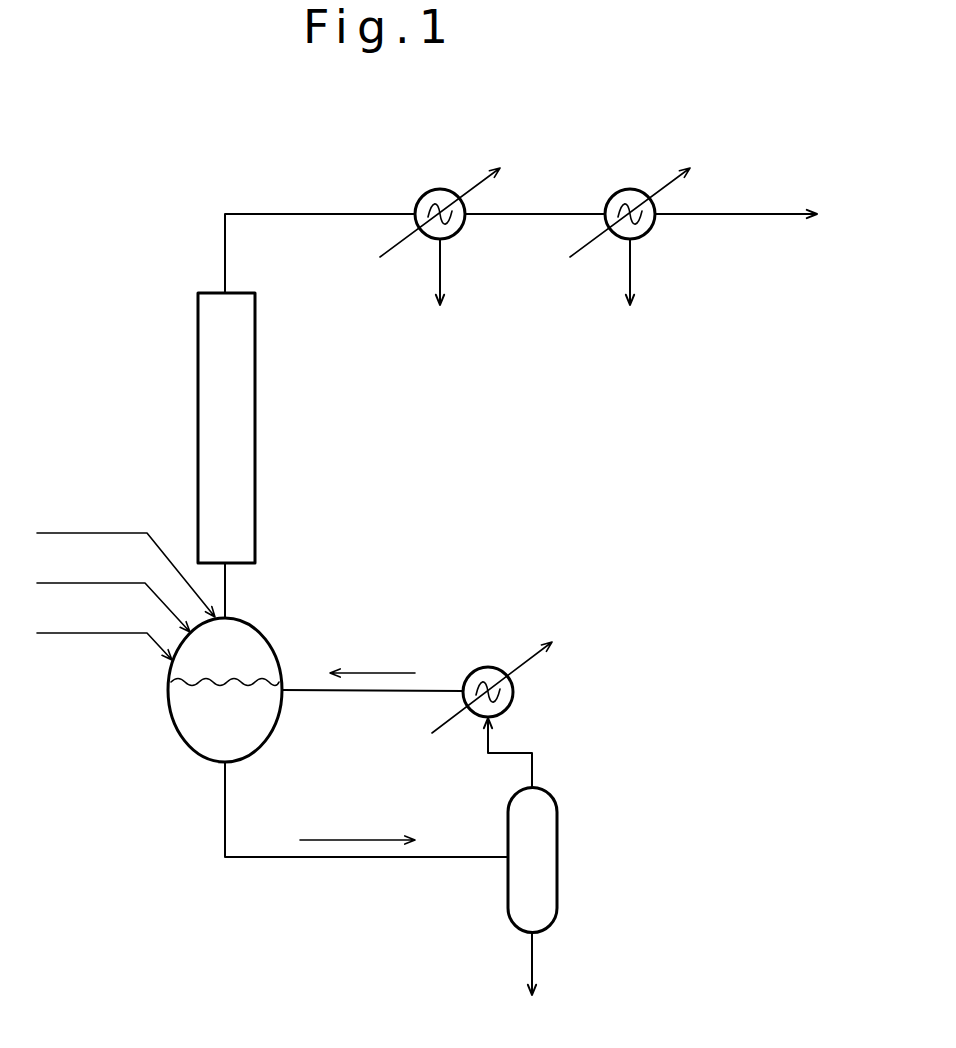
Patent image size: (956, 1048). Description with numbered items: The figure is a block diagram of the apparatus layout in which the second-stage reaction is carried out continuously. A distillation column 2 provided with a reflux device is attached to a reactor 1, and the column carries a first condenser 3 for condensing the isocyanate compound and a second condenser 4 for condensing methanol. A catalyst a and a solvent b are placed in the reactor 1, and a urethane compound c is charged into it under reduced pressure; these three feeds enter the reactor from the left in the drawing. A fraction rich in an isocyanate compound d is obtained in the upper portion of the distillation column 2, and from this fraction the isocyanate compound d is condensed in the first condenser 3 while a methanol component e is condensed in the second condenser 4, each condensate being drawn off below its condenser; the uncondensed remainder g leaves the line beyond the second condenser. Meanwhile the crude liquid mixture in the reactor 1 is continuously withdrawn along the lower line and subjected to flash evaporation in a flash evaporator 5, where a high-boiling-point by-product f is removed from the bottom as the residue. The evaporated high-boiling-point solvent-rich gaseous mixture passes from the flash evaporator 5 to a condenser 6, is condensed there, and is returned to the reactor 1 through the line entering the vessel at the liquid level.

The reactor 1 is at (272, 647).
The distillation column 2 is at (258, 352).
The first condenser 3 is at (438, 189).
The second condenser 4 is at (628, 189).
The flash evaporator 5 is at (560, 805).
The condenser 6 is at (486, 667).
The catalyst a is at (126, 562).
The solvent b is at (113, 595).
The urethane compound c is at (104, 634).
The isocyanate compound d is at (438, 288).
The methanol component e is at (629, 288).
The high-boiling-point by-product f is at (531, 980).
The off-gas stream g is at (747, 215).